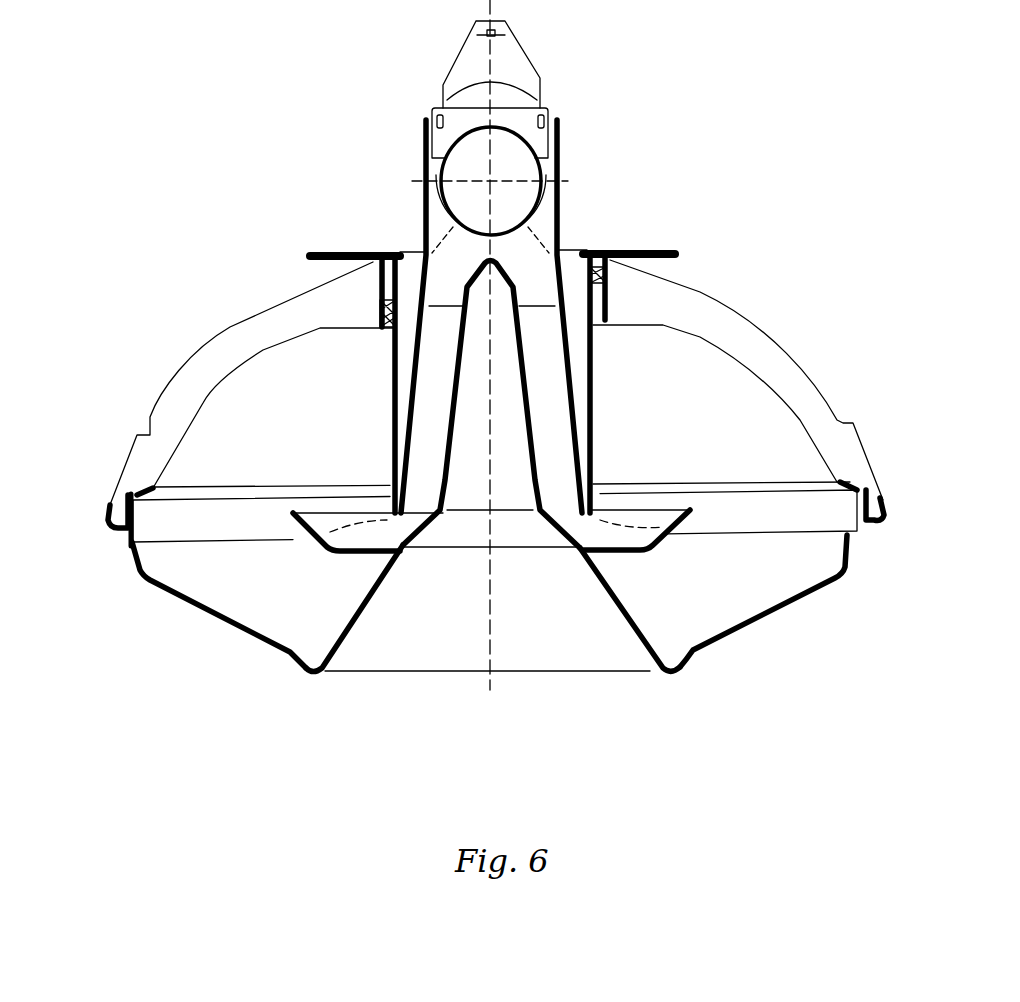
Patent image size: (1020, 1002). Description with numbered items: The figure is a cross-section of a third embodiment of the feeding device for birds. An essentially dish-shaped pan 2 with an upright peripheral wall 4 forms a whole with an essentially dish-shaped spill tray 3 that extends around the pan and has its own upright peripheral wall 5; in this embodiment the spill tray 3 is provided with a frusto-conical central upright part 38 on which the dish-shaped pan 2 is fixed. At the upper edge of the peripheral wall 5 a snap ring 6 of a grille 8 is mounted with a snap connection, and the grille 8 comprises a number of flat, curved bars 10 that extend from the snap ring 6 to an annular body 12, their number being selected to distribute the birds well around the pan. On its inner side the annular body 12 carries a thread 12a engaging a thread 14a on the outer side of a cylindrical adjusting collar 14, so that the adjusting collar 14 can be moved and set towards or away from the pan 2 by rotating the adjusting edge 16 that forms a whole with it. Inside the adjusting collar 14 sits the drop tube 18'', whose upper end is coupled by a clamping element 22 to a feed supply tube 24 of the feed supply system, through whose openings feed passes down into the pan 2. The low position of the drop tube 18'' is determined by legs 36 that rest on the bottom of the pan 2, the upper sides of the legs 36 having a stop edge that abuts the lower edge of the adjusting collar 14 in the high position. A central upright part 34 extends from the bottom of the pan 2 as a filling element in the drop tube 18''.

The dish-shaped pan 2 is at (380, 513).
The spill tray 3 is at (177, 600).
The upright peripheral wall 4 is at (305, 532).
The upright peripheral wall 5 is at (127, 537).
The snap ring 6 is at (108, 522).
The grille 8 is at (110, 348).
The bars 10 is at (765, 330).
The annular body 12 is at (608, 307).
The thread 12a is at (608, 272).
The adjusting collar 14 is at (390, 375).
The thread 14a is at (378, 320).
The adjusting edge 16 is at (350, 254).
The drop tube 18'' is at (551, 316).
The clamping element 22 is at (505, 63).
The feed supply tube 24 is at (440, 175).
The central upright part 34 is at (532, 413).
The legs 36 is at (607, 520).
The frusto-conical central upright part 38 is at (628, 637).